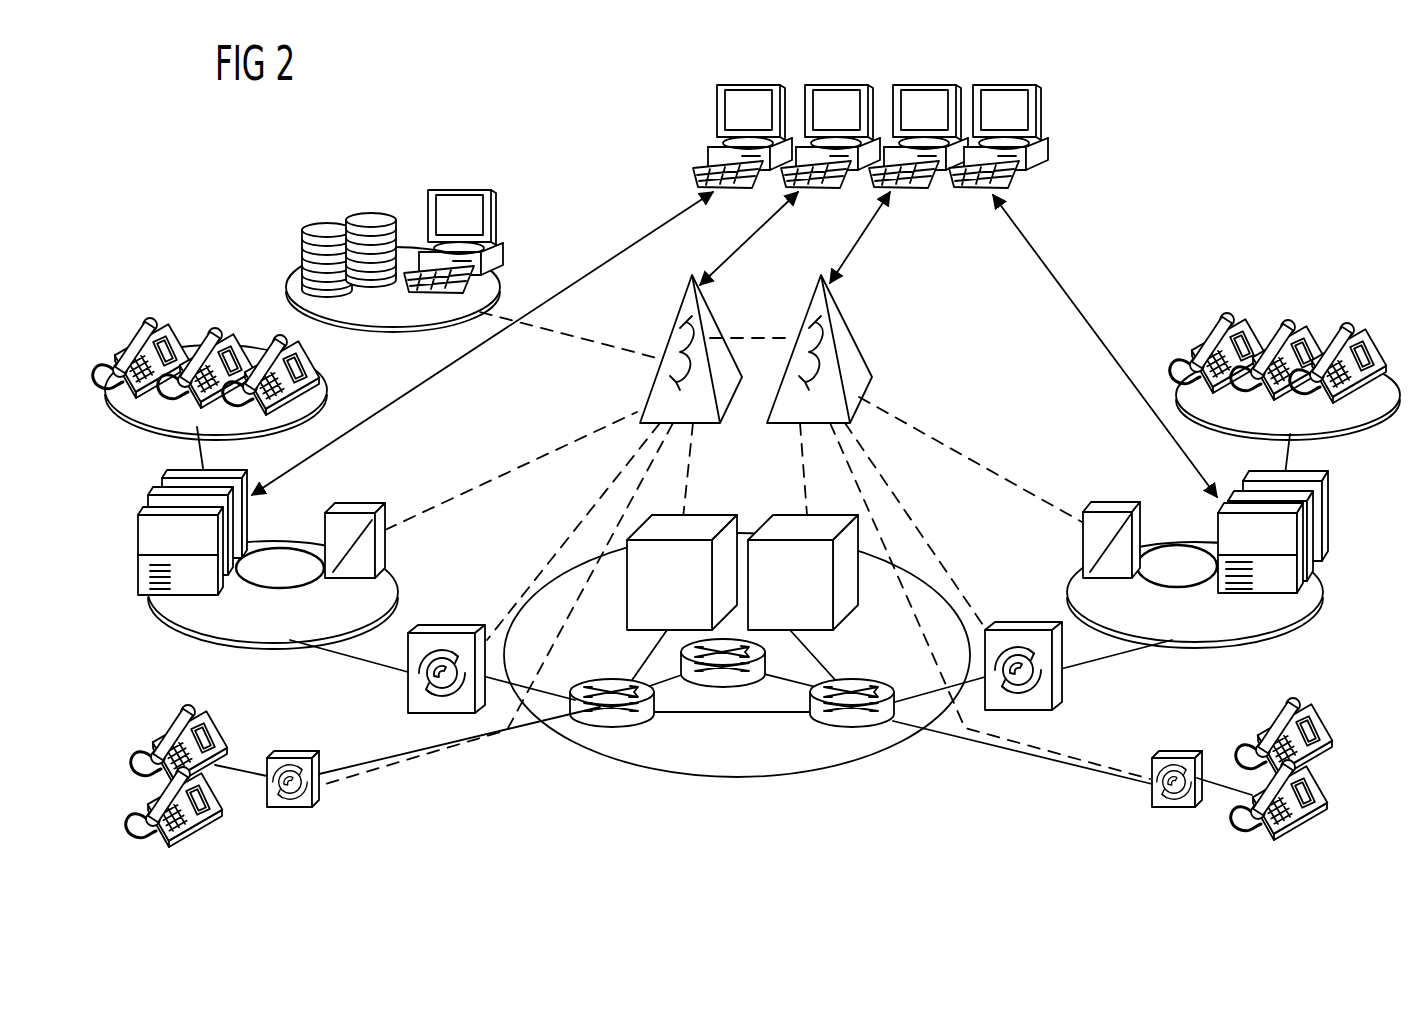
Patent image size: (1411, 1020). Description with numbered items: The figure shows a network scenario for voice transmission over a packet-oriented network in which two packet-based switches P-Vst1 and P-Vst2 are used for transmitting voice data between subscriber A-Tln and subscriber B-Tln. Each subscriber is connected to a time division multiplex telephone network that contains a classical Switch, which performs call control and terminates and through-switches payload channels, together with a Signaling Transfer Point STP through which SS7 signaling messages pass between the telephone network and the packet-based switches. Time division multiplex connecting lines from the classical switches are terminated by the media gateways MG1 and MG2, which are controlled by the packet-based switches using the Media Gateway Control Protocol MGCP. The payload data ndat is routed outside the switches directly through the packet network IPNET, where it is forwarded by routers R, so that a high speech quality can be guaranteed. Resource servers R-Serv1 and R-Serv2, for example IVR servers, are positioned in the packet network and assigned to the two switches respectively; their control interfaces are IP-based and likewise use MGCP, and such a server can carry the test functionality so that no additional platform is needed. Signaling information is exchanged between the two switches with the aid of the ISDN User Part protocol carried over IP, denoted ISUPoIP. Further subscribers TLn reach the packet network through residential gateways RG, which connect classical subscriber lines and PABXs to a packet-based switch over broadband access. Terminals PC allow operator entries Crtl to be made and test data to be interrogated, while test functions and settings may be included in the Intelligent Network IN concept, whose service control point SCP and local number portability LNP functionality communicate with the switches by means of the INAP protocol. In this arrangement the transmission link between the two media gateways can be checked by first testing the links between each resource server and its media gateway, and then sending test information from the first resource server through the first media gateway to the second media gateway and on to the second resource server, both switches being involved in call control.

The terminal PC is at (852, 84).
The operator entries Crtl is at (482, 343).
The Intelligent Network IN is at (394, 246).
The service control point SCP is at (320, 230).
The local number portability LNP is at (368, 220).
The subscriber A A-Tln is at (177, 420).
The subscriber B B-Tln is at (1325, 420).
The first packet-based switch P-Vst1 is at (658, 386).
The second packet-based switch P-Vst2 is at (858, 351).
The IN application part protocol INAP is at (568, 335).
The ISUP over IP ISUPoIP is at (755, 321).
The signaling system 7 SS7 is at (726, 492).
The Media Gateway Control Protocol MGCP is at (736, 531).
The packet-based network IPNET is at (737, 655).
The first resource server R-Serv1 is at (682, 572).
The second resource server R-Serv2 is at (803, 572).
The router R is at (732, 691).
The TDM-based switch Switch is at (733, 532).
The Signaling Transfer Point STP is at (732, 540).
The first media gateway MG1 is at (448, 626).
The second media gateway MG2 is at (1020, 623).
The payload data ndat is at (731, 671).
The residential gateway RG is at (292, 810).
The subscriber terminals TLn is at (175, 840).